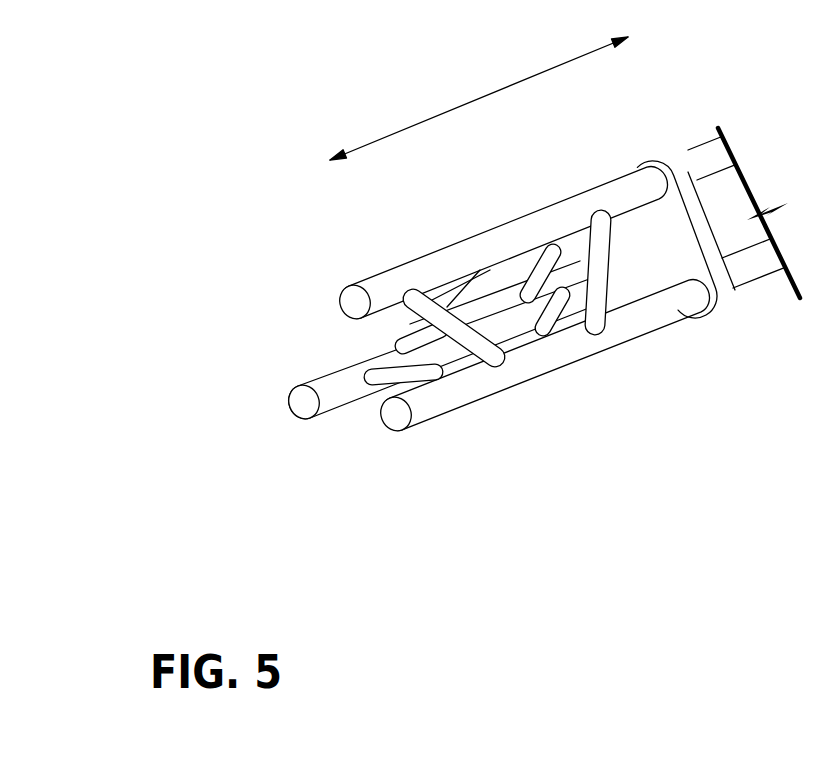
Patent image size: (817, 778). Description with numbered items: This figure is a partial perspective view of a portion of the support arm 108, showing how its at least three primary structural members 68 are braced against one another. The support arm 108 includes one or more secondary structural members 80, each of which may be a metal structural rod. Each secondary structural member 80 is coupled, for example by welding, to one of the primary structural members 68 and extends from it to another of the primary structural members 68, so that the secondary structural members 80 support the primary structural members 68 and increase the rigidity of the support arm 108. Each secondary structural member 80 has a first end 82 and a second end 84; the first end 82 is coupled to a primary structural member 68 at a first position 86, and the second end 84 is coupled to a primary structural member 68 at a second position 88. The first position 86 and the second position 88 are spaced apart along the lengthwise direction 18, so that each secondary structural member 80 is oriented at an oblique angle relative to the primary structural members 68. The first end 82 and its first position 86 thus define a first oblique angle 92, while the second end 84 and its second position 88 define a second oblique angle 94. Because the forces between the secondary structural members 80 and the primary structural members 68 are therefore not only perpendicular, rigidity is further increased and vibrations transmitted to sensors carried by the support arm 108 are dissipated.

The lengthwise direction 18 is at (480, 97).
The primary structural members 68 is at (502, 235).
The secondary structural member 80 is at (377, 383).
The first end 82 is at (454, 366).
The first position 86 is at (454, 366).
The second end 84 is at (454, 366).
The second position 88 is at (400, 287).
The first oblique angle 92 is at (689, 183).
The second oblique angle 94 is at (612, 302).
The support arm 108 is at (238, 245).